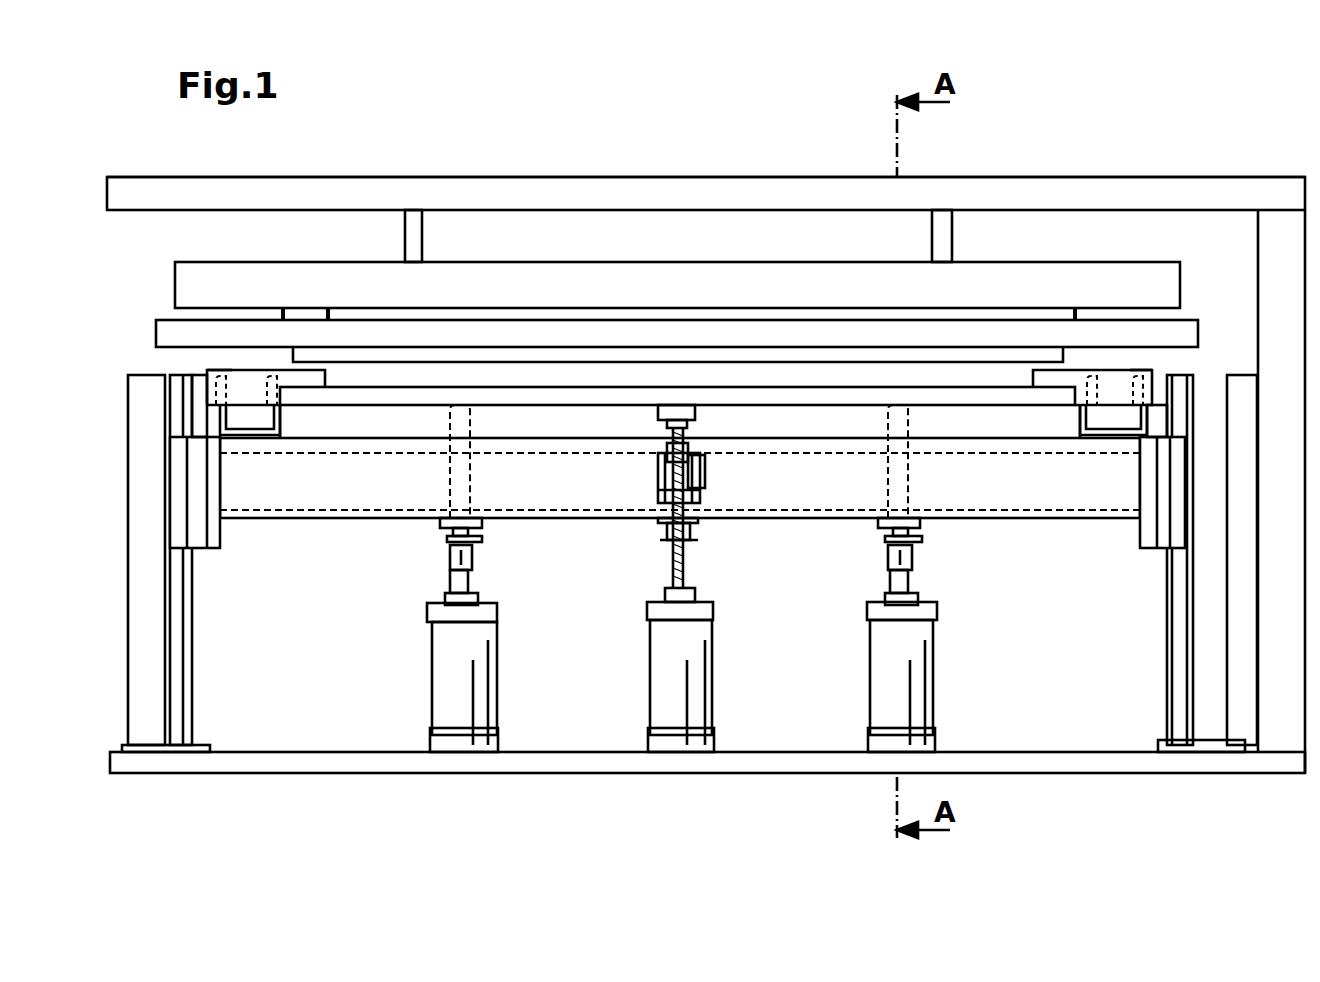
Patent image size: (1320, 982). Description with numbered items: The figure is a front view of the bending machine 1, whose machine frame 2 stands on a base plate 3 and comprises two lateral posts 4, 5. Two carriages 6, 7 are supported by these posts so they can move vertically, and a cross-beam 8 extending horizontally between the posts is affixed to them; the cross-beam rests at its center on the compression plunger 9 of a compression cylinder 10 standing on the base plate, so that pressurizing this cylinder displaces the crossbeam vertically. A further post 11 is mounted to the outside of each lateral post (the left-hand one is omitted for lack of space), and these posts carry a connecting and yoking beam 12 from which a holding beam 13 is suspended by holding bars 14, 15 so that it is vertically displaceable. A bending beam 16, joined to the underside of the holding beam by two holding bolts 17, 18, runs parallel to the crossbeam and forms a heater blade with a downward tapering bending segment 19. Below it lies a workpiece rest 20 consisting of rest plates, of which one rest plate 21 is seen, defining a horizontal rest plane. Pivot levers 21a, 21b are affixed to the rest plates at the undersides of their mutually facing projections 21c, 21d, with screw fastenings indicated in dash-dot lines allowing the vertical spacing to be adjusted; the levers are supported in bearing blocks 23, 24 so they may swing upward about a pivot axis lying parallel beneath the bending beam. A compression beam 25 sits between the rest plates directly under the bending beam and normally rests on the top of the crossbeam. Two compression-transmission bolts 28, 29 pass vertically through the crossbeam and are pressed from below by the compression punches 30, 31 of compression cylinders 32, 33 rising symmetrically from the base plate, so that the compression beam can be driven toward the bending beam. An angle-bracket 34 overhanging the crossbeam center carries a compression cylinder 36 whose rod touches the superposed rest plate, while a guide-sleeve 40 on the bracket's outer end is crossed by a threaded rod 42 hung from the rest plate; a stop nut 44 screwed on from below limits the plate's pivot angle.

The bending machine 1 is at (582, 126).
The machine frame 2 is at (1214, 174).
The base plate 3 is at (270, 765).
The lateral post 4 is at (152, 728).
The lateral post 5 is at (1213, 722).
The carriage 6 is at (190, 530).
The carriage 7 is at (1165, 515).
The cross-beam 8 is at (298, 500).
The compression plunger 9 is at (670, 535).
The compression cylinder 10 is at (670, 718).
The further post 11 is at (1288, 735).
The yoking beam 12 is at (1064, 184).
The holding beam 13 is at (800, 290).
The holding bar 14 is at (418, 212).
The holding bar 15 is at (950, 240).
The bending beam 16 is at (330, 316).
The holding bolt 17 is at (283, 316).
The holding bolt 18 is at (1075, 316).
The bending segment 19 is at (483, 355).
The workpiece rest 20 is at (372, 385).
The rest plate 21 is at (330, 400).
The pivot lever 21a is at (228, 378).
The pivot lever 21b is at (1152, 372).
The projection 21c is at (290, 378).
The projection 21d is at (1063, 378).
The bearing block 23 is at (218, 424).
The bearing block 24 is at (1135, 445).
The compression beam 25 is at (572, 420).
The compression-transmission bolt 28 is at (450, 535).
The compression-transmission bolt 29 is at (890, 535).
The compression punch 30 is at (470, 560).
The compression punch 31 is at (912, 560).
The compression cylinder 32 is at (455, 718).
The compression cylinder 33 is at (885, 718).
The angle-bracket 34 is at (705, 480).
The compression cylinder 36 is at (700, 500).
The guide-sleeve 40 is at (662, 463).
The threaded rod 42 is at (693, 540).
The stop nut 44 is at (670, 545).